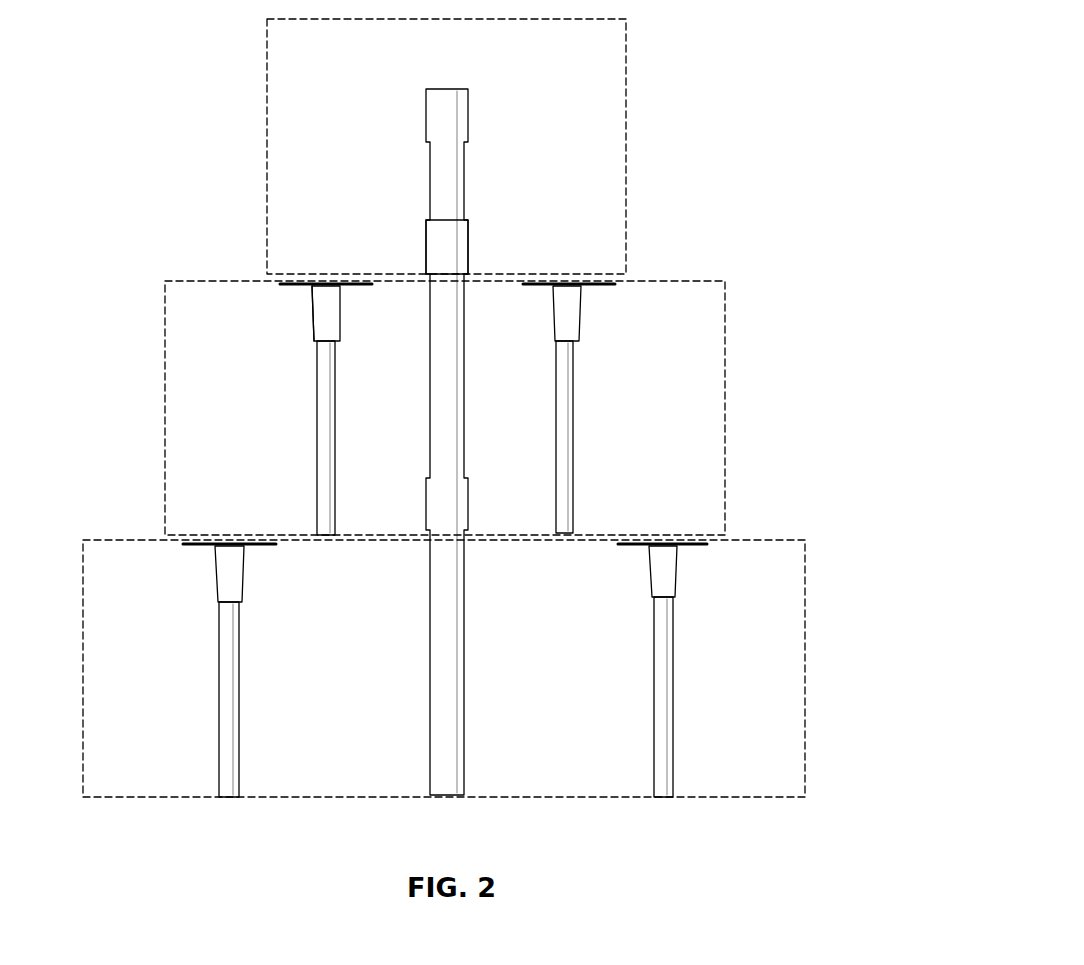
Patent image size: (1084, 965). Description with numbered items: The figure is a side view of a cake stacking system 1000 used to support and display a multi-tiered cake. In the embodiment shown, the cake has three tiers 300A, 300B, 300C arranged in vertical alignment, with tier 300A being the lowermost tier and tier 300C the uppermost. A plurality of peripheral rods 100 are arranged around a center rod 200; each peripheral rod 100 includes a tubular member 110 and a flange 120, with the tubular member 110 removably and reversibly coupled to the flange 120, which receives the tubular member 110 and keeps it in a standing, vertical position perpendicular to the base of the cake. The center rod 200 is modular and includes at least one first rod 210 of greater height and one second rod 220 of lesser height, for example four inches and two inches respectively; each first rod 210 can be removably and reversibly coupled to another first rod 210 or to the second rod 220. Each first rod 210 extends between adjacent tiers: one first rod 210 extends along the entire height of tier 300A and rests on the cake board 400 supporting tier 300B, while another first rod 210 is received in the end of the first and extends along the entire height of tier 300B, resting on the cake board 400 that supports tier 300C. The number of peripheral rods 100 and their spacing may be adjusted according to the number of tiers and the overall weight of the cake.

The cake stacking system 1000 is at (180, 122).
The peripheral rod 100 is at (185, 793).
The tubular member 110 is at (317, 408).
The flange 120 is at (317, 309).
The center rod 200 is at (437, 793).
The first rod 210 is at (462, 385).
The second rod 220 is at (468, 170).
The tier 300A is at (805, 695).
The tier 300B is at (725, 400).
The tier 300C is at (626, 105).
The cake board 400 is at (615, 275).